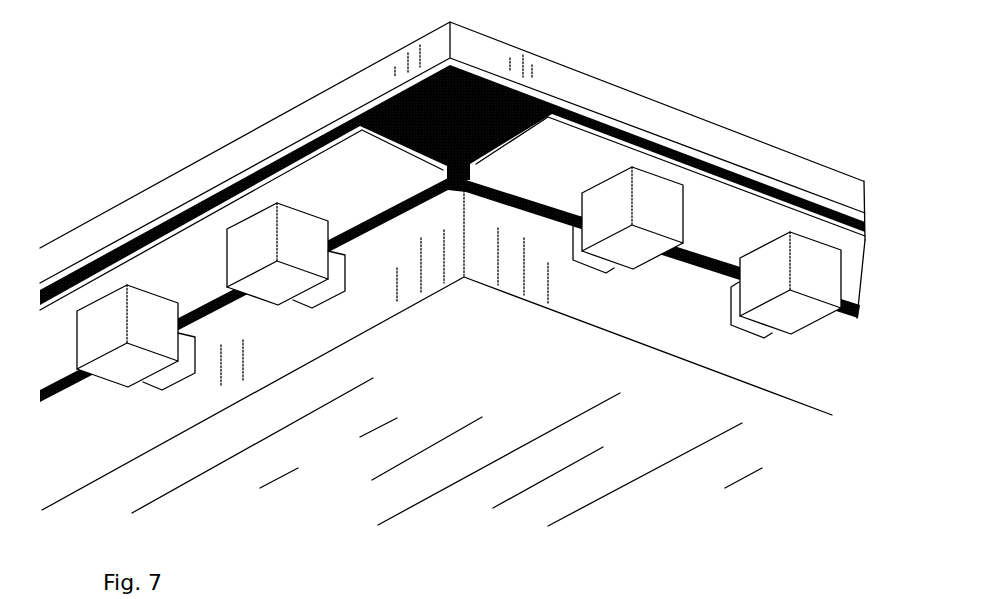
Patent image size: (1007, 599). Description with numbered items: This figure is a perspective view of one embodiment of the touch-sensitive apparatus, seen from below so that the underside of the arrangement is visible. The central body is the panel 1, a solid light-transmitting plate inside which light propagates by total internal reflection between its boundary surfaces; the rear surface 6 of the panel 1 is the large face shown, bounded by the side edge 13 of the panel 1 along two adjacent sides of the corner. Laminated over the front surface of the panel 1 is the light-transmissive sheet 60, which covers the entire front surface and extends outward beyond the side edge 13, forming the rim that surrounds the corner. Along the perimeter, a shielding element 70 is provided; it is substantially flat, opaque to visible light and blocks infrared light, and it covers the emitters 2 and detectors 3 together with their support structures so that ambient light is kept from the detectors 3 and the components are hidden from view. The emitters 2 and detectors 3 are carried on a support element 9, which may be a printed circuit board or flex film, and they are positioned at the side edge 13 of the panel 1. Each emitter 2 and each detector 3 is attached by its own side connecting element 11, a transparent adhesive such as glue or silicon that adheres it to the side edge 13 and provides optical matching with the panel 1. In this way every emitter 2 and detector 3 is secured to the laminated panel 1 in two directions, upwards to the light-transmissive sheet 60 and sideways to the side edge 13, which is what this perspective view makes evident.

The panel 1 is at (655, 408).
The emitter 2 is at (90, 338).
The detector 3 is at (243, 256).
The rear surface 6 is at (468, 352).
The support element 9 is at (343, 191).
The side connecting element 11 is at (174, 385).
The side edge 13 is at (100, 413).
The light-transmissive sheet 60 is at (642, 107).
The shielding element 70 is at (406, 108).